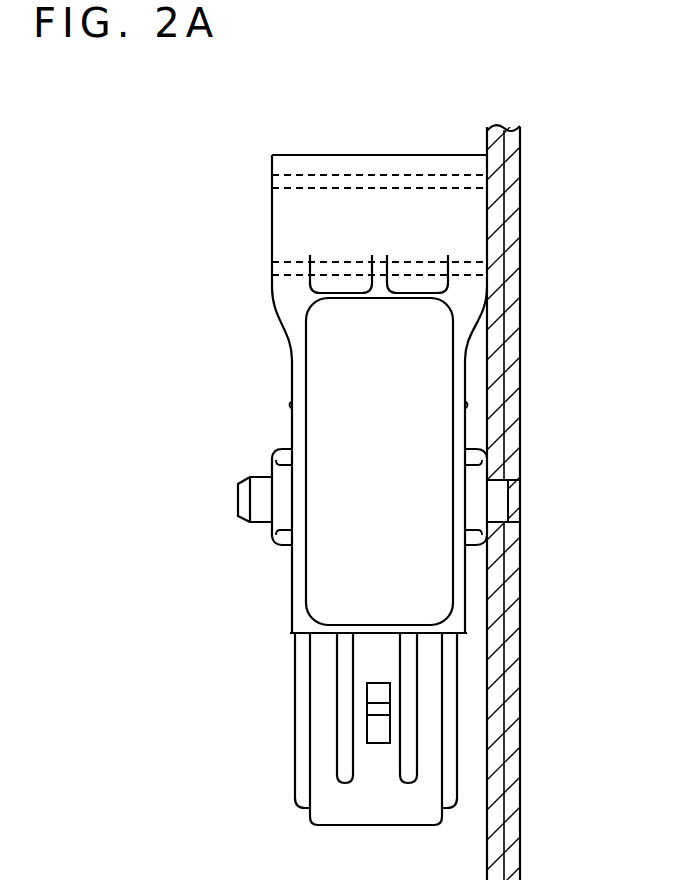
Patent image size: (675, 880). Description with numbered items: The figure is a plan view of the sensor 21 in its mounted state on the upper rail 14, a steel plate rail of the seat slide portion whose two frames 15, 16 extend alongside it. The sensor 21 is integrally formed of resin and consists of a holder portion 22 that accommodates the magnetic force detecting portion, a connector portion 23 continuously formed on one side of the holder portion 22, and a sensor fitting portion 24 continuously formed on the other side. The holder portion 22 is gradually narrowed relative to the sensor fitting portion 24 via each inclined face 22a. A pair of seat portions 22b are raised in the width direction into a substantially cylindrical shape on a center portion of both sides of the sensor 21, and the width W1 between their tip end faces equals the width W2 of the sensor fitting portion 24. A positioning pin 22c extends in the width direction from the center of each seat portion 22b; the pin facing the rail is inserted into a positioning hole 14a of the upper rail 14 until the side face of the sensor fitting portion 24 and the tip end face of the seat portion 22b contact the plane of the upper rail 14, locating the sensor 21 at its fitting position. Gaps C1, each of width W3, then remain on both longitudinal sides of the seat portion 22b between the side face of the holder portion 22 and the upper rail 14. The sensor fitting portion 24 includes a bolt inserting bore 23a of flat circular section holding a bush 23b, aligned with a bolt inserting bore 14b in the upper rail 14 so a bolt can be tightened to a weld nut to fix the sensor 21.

The upper rail 14 is at (570, 857).
The positioning hole 14a is at (521, 490).
The bolt inserting bore 14b is at (504, 191).
The frame 15 is at (487, 840).
The frame 16 is at (520, 790).
The sensor 21 is at (246, 160).
The holder portion 22 is at (292, 382).
The inclined face 22a is at (282, 332).
The seat portion 22b is at (278, 452).
The positioning pin 22c is at (245, 517).
The connector portion 23 is at (295, 727).
The bolt inserting bore 23a is at (272, 177).
The bush 23b is at (312, 190).
The sensor fitting portion 24 is at (272, 222).
The width between tip end faces of seat portions W1 is at (487, 588).
The width of sensor fitting portion W2 is at (487, 141).
The width of gap W3 is at (512, 382).
The gap C1 is at (470, 427).